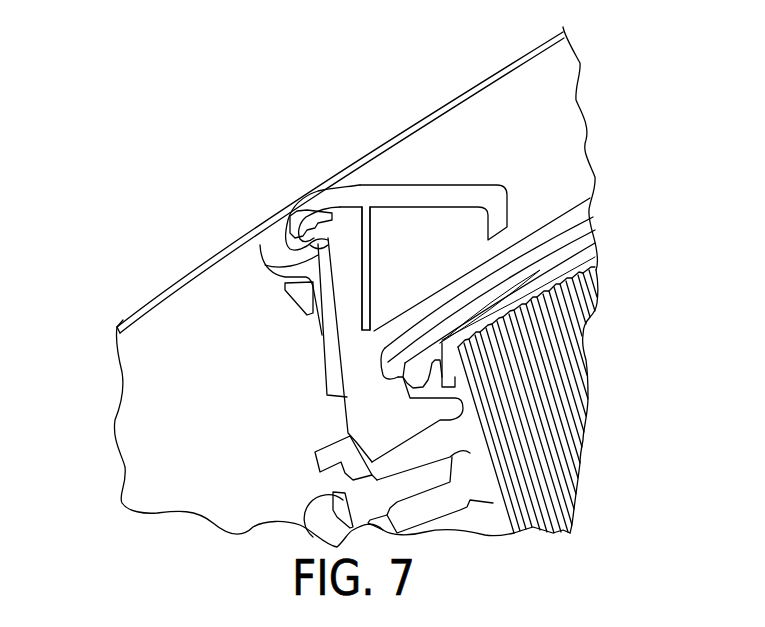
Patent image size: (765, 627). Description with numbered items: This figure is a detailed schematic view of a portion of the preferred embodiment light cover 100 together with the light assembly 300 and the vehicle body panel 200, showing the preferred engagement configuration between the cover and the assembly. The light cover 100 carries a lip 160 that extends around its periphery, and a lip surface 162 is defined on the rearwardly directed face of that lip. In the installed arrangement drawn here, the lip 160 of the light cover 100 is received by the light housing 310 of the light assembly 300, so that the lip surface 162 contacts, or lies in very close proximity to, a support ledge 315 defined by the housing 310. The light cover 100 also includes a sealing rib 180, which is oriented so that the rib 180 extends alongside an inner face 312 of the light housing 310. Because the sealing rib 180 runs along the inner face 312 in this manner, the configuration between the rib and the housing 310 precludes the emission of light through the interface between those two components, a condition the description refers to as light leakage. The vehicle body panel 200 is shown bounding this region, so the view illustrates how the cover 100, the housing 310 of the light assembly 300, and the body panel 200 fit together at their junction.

The light cover 100 is at (425, 193).
The lip 160 is at (328, 204).
The lip surface 162 is at (305, 222).
The sealing rib 180 is at (372, 262).
The vehicle body panel 200 is at (146, 305).
The light assembly 300 is at (553, 363).
The light housing 310 is at (347, 330).
The inner face 312 is at (360, 320).
The support ledge 315 is at (261, 246).